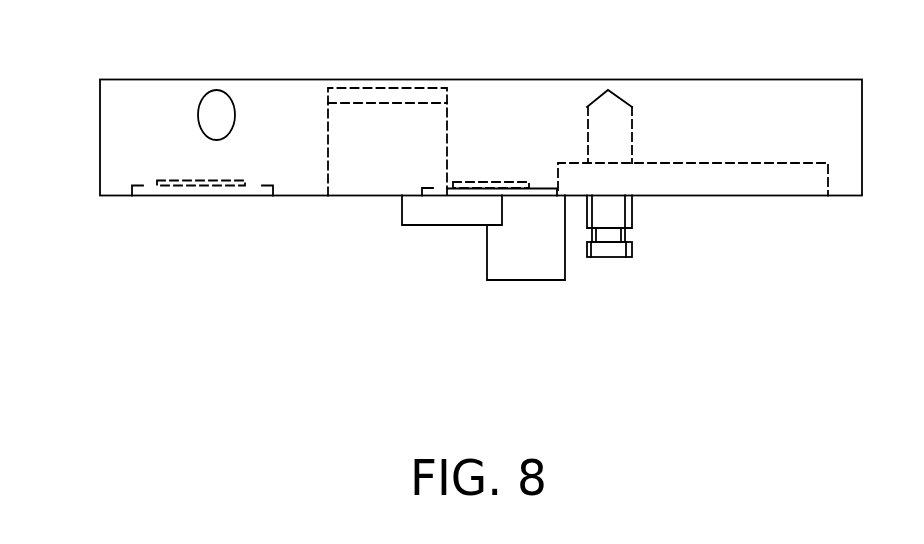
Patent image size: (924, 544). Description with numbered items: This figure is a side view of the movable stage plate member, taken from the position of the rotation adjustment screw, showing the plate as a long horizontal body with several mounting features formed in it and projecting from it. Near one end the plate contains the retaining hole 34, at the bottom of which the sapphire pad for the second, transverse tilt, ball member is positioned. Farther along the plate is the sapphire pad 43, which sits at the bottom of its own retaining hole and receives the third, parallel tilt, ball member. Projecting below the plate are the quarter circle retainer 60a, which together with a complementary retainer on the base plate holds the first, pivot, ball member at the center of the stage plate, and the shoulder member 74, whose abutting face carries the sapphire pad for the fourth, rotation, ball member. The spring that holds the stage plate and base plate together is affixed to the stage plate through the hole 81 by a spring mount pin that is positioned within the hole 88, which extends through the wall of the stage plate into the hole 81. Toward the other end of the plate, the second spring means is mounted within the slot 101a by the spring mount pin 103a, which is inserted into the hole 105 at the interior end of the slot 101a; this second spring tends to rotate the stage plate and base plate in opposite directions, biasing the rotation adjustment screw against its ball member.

The retaining hole 34 is at (150, 161).
The sapphire pad 43 is at (489, 111).
The quarter circle retainer 60a is at (424, 253).
The shoulder member 74 is at (506, 282).
The hole 81 is at (334, 169).
The hole 88 is at (175, 80).
The slot 101a is at (707, 214).
The spring mount pin 103a is at (664, 231).
The hole 105 is at (653, 96).